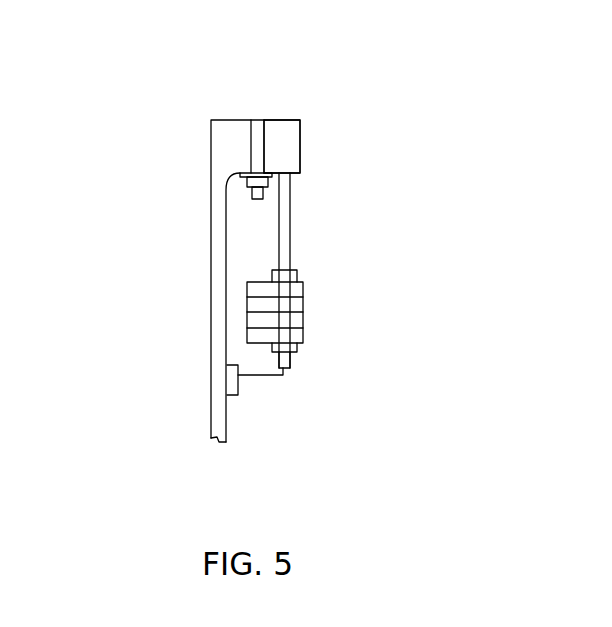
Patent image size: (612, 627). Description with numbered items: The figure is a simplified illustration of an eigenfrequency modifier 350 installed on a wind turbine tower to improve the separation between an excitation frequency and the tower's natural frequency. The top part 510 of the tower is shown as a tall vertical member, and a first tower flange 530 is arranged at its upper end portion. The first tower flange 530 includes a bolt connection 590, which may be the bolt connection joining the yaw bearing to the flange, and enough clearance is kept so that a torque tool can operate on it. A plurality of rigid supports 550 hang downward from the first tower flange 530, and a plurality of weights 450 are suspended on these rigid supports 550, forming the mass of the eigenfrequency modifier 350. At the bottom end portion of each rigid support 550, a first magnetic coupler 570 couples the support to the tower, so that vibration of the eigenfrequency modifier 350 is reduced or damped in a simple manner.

The eigenfrequency modifier 350 is at (308, 336).
The weights 450 is at (302, 303).
The top part 510 is at (192, 237).
The first tower flange 530 is at (281, 133).
The rigid supports 550 is at (290, 212).
The first magnetic coupler 570 is at (263, 375).
The bolt connection 590 is at (252, 142).